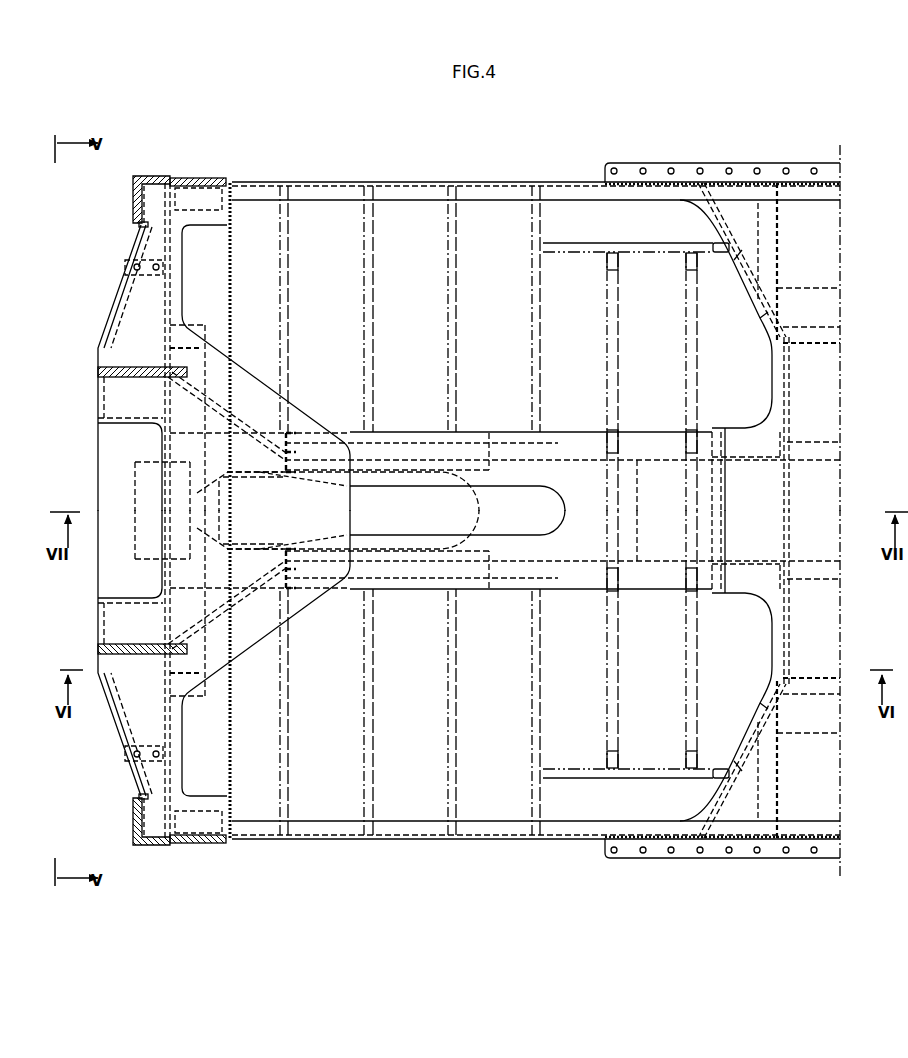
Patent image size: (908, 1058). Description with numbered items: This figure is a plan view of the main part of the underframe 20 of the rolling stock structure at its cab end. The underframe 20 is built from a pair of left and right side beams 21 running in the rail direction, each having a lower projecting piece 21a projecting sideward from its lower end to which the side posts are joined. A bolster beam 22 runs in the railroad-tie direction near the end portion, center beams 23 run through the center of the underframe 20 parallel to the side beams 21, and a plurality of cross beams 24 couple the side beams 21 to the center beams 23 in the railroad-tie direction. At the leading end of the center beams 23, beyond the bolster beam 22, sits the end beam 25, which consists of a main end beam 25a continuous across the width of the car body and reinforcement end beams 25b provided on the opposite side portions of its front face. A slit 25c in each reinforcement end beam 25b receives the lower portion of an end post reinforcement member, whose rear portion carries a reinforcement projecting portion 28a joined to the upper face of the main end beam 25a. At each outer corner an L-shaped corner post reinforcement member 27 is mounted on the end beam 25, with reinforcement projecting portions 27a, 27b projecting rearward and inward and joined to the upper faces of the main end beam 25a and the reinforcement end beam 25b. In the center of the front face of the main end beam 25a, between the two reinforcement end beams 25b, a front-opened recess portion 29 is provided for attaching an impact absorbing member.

The underframe 20 is at (480, 132).
The side beams 21 is at (626, 158).
The lower projecting piece 21a is at (742, 168).
The bolster beams 22 is at (757, 718).
The center beams 23 is at (643, 580).
The cross beams 24 is at (368, 272).
The end beams 25 is at (98, 316).
The main end beam 25a is at (213, 285).
The reinforcement end beams 25b is at (125, 268).
The slit 25c is at (98, 370).
The corner post reinforcement members 27 is at (150, 172).
The reinforcement projecting portion 27a is at (195, 180).
The reinforcement projecting portion 27b is at (133, 215).
The reinforcement projecting portions 28a is at (190, 372).
The recess portion 29 is at (110, 425).